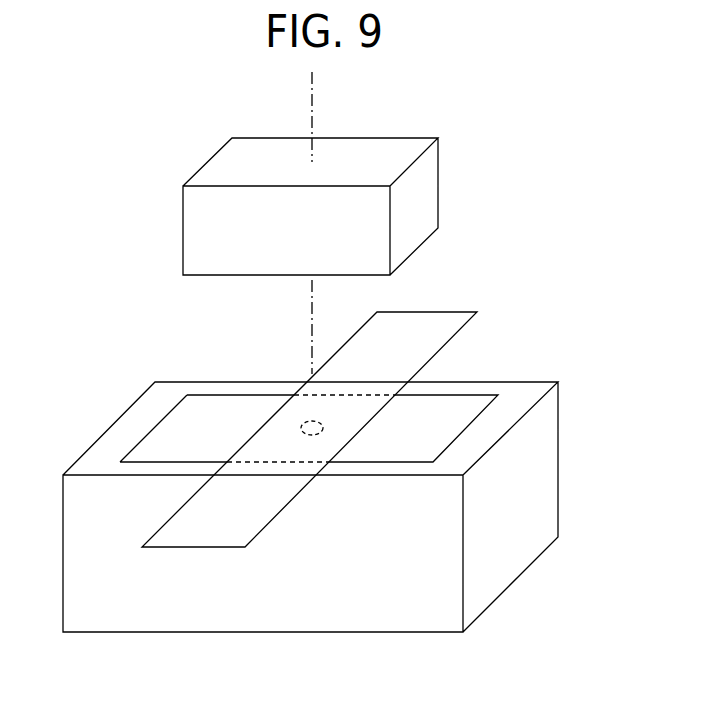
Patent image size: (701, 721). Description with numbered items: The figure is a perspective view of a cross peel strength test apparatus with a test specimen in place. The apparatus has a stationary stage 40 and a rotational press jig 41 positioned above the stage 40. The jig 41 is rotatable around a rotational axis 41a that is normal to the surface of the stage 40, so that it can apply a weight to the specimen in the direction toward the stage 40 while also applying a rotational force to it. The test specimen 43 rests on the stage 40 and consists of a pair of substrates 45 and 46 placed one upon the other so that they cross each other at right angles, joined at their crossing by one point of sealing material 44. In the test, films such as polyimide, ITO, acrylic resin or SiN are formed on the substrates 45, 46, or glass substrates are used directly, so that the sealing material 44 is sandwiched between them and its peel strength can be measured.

The stationary stage 40 is at (323, 617).
The rotational press jig 41 is at (425, 213).
The rotational axis 41a is at (312, 102).
The test specimen 43 is at (197, 392).
The sealing material 44 is at (312, 435).
The substrate 45 is at (468, 403).
The substrate 46 is at (435, 322).